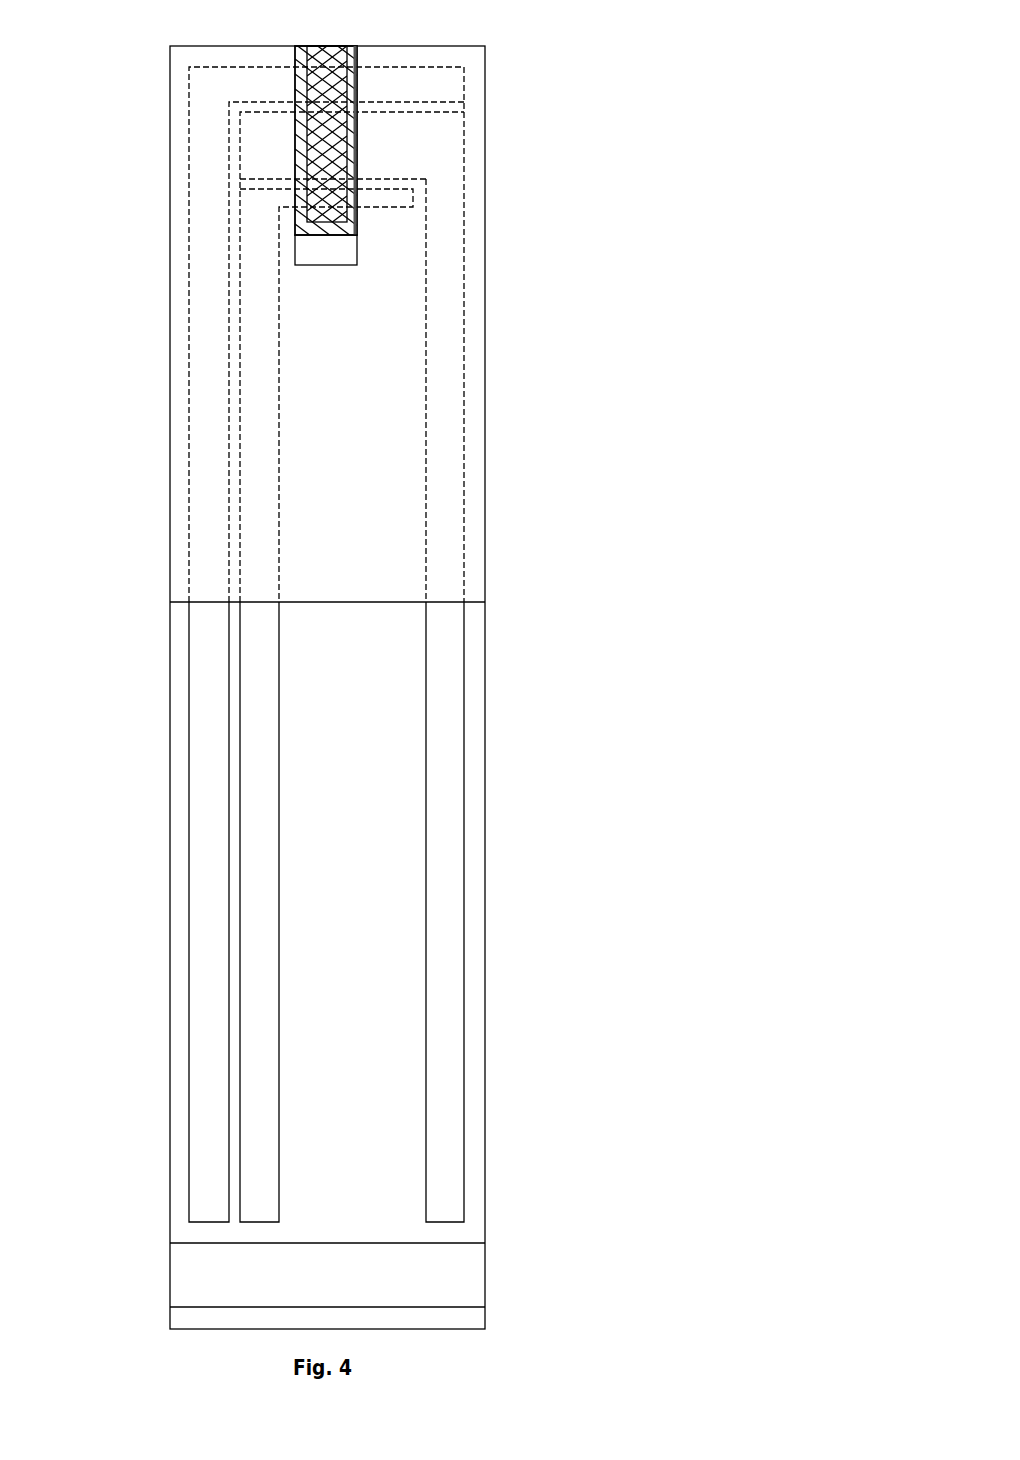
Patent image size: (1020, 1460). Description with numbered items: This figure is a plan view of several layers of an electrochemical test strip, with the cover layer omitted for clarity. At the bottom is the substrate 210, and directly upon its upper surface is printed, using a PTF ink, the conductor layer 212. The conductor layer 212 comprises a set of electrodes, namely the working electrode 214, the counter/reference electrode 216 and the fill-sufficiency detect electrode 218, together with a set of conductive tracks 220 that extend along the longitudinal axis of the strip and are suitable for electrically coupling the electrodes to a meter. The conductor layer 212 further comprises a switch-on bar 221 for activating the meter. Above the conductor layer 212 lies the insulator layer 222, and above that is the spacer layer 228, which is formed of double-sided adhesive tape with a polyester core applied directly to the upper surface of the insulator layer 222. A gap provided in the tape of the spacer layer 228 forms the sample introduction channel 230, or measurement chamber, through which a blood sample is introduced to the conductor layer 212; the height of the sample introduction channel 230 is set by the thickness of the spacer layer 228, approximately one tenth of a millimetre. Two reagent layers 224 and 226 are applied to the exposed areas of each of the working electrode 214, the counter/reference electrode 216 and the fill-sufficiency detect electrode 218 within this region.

The substrate 210 is at (403, 1317).
The conductor layer 212 is at (445, 953).
The working electrode 214 is at (412, 83).
The counter/reference electrode 216 is at (265, 137).
The fill-sufficiency detect electrode 218 is at (390, 161).
The conductive tracks 220 is at (197, 1193).
The switch-on bar 221 is at (430, 1257).
The insulator layer 222 is at (357, 82).
The reagent layer 224 is at (327, 44).
The reagent layer 226 is at (342, 47).
The spacer layer 228 is at (412, 552).
The sample introduction channel 230 is at (333, 250).